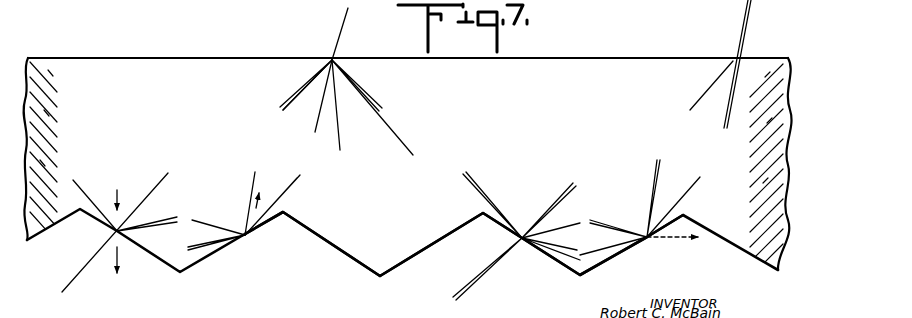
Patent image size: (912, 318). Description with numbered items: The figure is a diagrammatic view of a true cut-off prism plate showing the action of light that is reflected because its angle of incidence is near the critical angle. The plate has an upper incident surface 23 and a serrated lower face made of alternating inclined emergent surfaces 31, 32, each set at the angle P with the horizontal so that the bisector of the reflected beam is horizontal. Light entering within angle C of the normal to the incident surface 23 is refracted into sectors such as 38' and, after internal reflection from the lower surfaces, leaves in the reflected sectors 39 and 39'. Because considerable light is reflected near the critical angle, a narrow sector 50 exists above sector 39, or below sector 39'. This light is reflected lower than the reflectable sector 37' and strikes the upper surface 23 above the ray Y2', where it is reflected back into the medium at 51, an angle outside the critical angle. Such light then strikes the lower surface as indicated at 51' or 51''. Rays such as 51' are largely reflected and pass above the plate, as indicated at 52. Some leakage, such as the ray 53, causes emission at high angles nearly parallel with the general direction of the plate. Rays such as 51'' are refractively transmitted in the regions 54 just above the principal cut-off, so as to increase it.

The incident surface 23 is at (272, 58).
The emergent surface 31 is at (165, 270).
The leftwardly inclined lower surface 32 is at (240, 246).
The sector of reflectable light 37' is at (265, 203).
The sector of refracted light 38' is at (319, 70).
The reflected sector 39 is at (119, 232).
The reflected sector 39' is at (214, 233).
The narrow sector 50 is at (291, 97).
The reflected ray 51 is at (370, 85).
The ray 51' is at (475, 205).
The ray 51'' is at (584, 210).
The ray passing above the plate 52 is at (745, 7).
The leakage ray 53 is at (683, 242).
The transmission regions 54 is at (470, 290).
The angle C is at (389, 130).
The ray Y2' is at (288, 95).